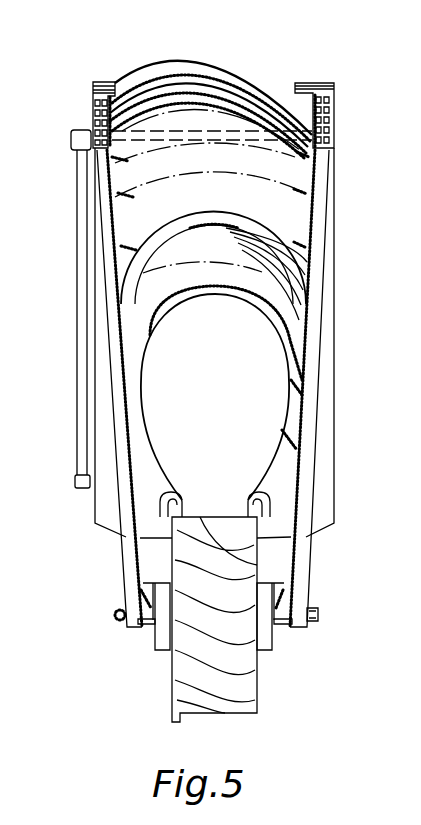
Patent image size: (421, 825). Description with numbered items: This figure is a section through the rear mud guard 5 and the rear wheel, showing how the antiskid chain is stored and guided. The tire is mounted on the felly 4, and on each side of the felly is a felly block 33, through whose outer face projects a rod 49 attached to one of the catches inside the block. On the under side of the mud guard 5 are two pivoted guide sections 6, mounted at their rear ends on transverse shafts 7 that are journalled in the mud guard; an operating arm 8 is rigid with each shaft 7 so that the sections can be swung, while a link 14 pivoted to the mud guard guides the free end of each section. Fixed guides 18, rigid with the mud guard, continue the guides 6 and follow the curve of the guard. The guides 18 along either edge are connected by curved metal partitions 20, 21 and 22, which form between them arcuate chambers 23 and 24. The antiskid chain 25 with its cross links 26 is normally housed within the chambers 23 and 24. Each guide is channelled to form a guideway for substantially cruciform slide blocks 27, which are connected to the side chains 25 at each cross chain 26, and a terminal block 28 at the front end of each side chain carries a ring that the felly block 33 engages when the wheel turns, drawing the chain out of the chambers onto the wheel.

The felly 4 is at (258, 716).
The rear mud guard 5 is at (192, 60).
The pivoted guide section 6 is at (334, 119).
The transverse shaft 7 is at (197, 135).
The operating arm 8 is at (76, 278).
The link 14 is at (313, 623).
The fixed guide 18 is at (334, 92).
The curved metal partition 20 is at (205, 55).
The curved metal partition 21 is at (222, 72).
The curved metal partition 22 is at (228, 96).
The arcuate chamber 23 is at (258, 88).
The arcuate chamber 24 is at (283, 93).
The antiskid chain 25 is at (310, 218).
The cross link 26 is at (128, 192).
The slide block 27 is at (93, 113).
The terminal block 28 is at (117, 619).
The felly block 33 is at (163, 650).
The rod 49 is at (148, 626).